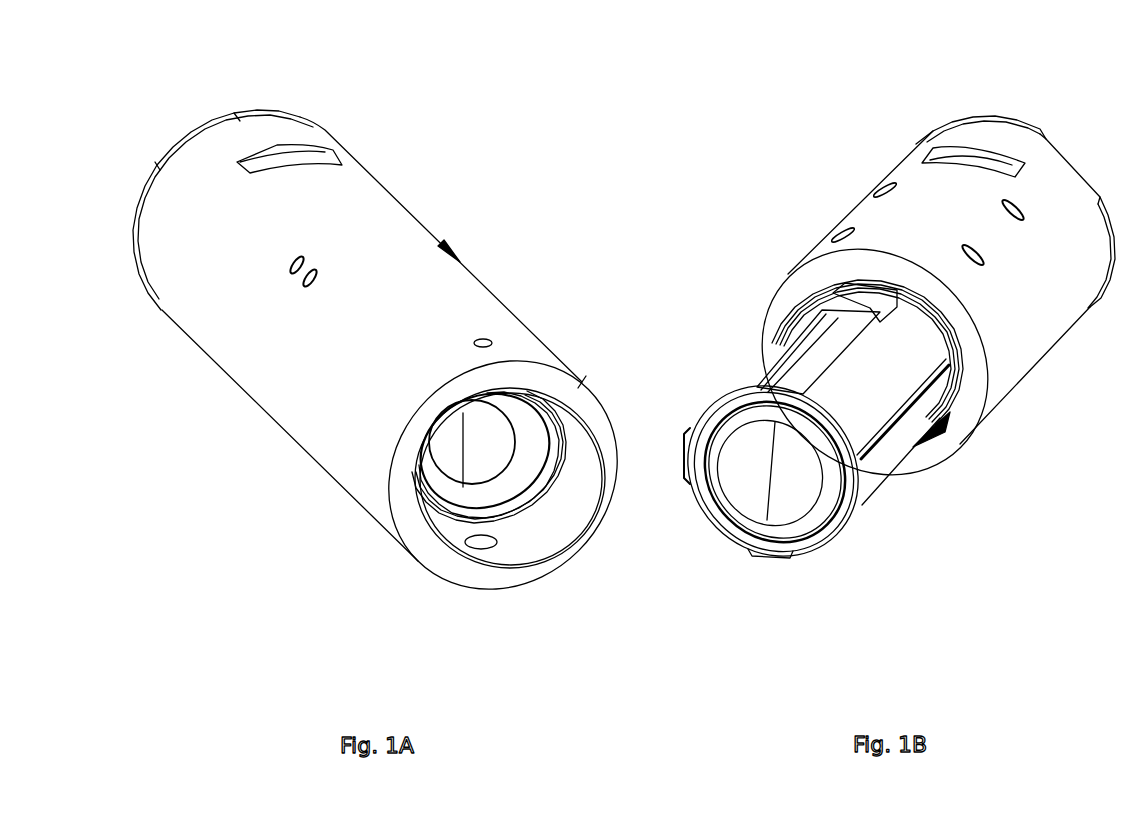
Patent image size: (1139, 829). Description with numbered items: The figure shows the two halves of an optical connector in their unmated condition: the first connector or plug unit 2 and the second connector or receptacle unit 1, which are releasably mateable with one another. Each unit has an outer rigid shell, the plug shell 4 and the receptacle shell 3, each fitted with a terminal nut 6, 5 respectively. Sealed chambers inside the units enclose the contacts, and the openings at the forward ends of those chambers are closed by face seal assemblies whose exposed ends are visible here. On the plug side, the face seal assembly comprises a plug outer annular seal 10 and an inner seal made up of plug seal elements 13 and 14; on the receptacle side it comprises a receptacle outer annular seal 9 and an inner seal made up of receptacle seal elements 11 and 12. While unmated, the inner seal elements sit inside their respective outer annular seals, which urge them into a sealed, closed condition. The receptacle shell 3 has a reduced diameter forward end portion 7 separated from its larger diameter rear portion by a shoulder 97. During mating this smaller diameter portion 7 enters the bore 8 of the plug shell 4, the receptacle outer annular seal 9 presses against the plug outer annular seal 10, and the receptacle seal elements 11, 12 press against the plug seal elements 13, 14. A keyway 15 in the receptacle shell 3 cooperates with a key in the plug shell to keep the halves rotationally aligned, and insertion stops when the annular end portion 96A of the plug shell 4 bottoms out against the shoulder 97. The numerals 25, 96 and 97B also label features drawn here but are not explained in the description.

In FIG. 1B, the receptacle unit 1 is at (756, 129).
In FIG. 1A, the plug unit 2 is at (546, 95).
In FIG. 1B, the receptacle shell 3 is at (1015, 325).
In FIG. 1A, the plug shell 4 is at (235, 327).
In FIG. 1B, the terminal nut 5 is at (958, 128).
In FIG. 1A, the terminal nut 6 is at (287, 114).
In FIG. 1B, the smaller diameter portion 7 is at (862, 510).
In FIG. 1A, the bore 8 is at (453, 538).
In FIG. 1B, the receptacle outer annular seal 9 is at (818, 510).
In FIG. 1A, the plug outer annular seal 10 is at (512, 468).
In FIG. 1B, the receptacle seal element 11 is at (747, 470).
In FIG. 1B, the receptacle seal element 12 is at (790, 470).
In FIG. 1A, the plug seal element 13 is at (445, 457).
In FIG. 1A, the plug seal element 14 is at (482, 443).
In FIG. 1B, the keyway 15 is at (810, 355).
In FIG. 1A, the vent slots 25 is at (293, 270).
In FIG. 1A, the receptacle end ring 96 is at (570, 393).
In FIG. 1A, the annular end portion 96A is at (582, 417).
In FIG. 1B, the shoulder 97 is at (970, 382).
In FIG. 1B, the keyway slot 97B is at (943, 430).